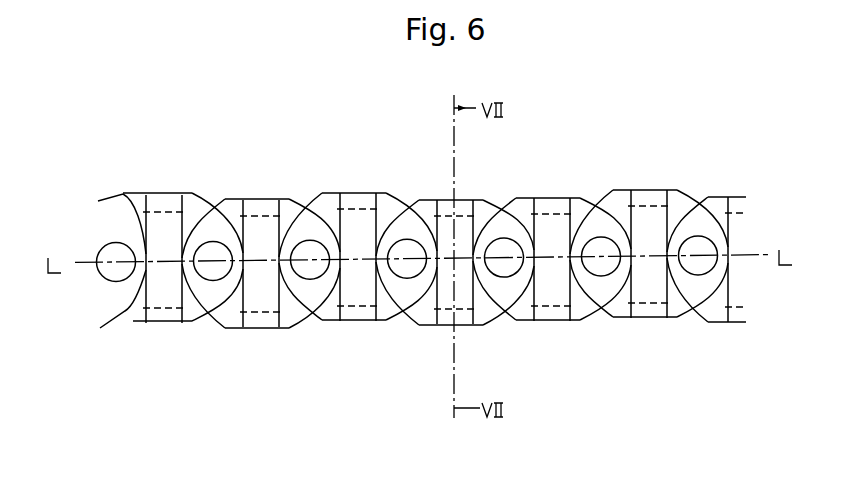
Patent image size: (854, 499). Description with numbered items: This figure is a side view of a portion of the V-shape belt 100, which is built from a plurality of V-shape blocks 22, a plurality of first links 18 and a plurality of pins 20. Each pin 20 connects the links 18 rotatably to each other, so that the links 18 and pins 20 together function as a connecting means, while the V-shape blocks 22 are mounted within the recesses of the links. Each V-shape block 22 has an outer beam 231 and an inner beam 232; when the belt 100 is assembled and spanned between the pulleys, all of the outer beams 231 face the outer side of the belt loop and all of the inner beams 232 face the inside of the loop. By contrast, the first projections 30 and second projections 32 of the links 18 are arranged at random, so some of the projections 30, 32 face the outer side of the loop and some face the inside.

The V-shape belt 100 is at (693, 136).
The first link 18 is at (295, 288).
The pin 20 is at (215, 273).
The V-shape block 22 is at (259, 295).
The first projection 30 is at (288, 198).
The second projection 32 is at (192, 197).
The outer beam 231 is at (253, 198).
The inner beam 232 is at (268, 327).